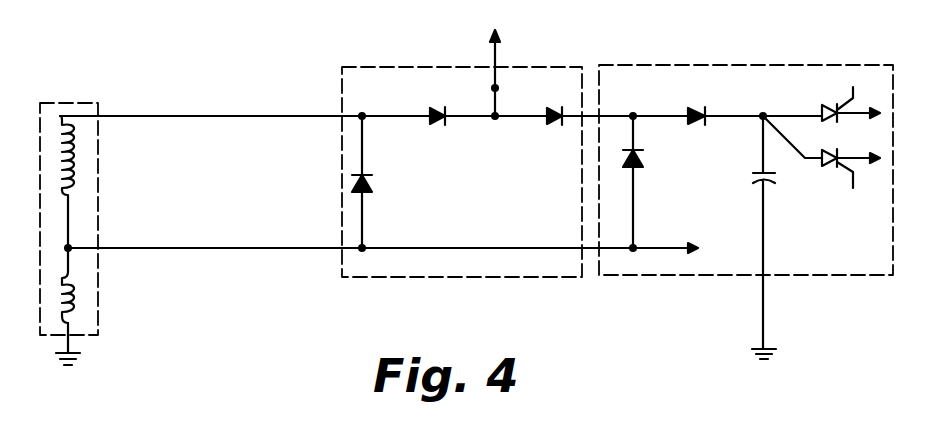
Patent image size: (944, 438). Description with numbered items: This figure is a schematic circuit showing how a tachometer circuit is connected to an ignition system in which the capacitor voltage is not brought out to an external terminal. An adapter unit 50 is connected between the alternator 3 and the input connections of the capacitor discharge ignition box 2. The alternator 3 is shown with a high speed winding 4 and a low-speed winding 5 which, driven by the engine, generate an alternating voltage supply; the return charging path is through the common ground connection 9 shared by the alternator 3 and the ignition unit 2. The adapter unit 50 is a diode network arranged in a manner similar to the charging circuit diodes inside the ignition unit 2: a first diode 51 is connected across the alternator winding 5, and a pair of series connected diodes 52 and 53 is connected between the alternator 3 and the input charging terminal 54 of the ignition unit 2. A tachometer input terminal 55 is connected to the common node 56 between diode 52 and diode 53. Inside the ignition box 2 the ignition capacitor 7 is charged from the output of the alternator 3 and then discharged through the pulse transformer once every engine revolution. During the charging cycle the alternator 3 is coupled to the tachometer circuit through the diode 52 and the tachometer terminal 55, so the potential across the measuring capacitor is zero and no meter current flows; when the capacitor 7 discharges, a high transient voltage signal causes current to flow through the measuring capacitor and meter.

The ignition unit 2 is at (833, 244).
The alternator 3 is at (102, 323).
The high speed winding 4 is at (74, 293).
The low-speed winding 5 is at (76, 177).
The ignition capacitor 7 is at (752, 176).
The common ground connection 9 is at (777, 355).
The adapter unit 50 is at (335, 93).
The first diode 51 is at (370, 183).
The diode 52 is at (436, 126).
The diode 53 is at (549, 126).
The input charging terminal 54 is at (633, 113).
The tachometer input terminal 55 is at (492, 88).
The common node 56 is at (495, 122).